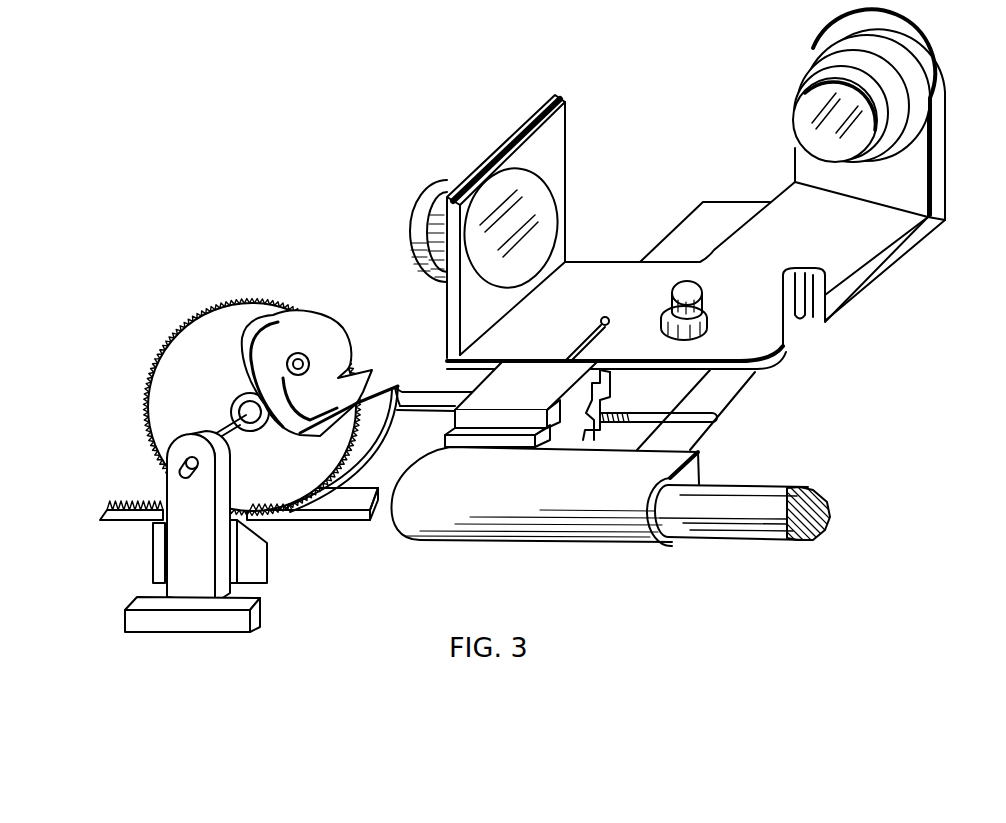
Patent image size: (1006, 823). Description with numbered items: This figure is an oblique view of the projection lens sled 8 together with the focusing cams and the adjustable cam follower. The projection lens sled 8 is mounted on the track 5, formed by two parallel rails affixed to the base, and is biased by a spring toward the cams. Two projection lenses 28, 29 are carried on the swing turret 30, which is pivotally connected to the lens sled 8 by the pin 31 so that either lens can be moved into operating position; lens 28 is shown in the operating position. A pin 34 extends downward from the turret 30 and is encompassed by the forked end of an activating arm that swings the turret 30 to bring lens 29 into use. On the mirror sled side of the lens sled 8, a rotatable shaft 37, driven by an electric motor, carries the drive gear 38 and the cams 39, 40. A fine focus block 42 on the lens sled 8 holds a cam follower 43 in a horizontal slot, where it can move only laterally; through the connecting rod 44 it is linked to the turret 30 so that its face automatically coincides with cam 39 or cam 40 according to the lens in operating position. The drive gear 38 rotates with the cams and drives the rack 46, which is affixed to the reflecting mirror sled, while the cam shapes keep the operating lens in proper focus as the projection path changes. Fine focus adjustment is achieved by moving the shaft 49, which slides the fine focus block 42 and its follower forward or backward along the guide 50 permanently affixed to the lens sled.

The track 5 is at (732, 512).
The projection lens sled 8 is at (708, 202).
The projection lens 28 is at (435, 218).
The projection lens 29 is at (900, 103).
The swing turret 30 is at (878, 250).
The pin 31 is at (680, 292).
The pin 34 is at (800, 318).
The rotatable shaft 37 is at (178, 473).
The drive gear 38 is at (183, 373).
The cam 39 is at (266, 368).
The cam 40 is at (318, 330).
The fine focus block 42 is at (520, 376).
The cam follower 43 is at (440, 392).
The connecting rod 44 is at (602, 322).
The rack 46 is at (115, 502).
The shaft 49 is at (712, 412).
The guide 50 is at (448, 432).